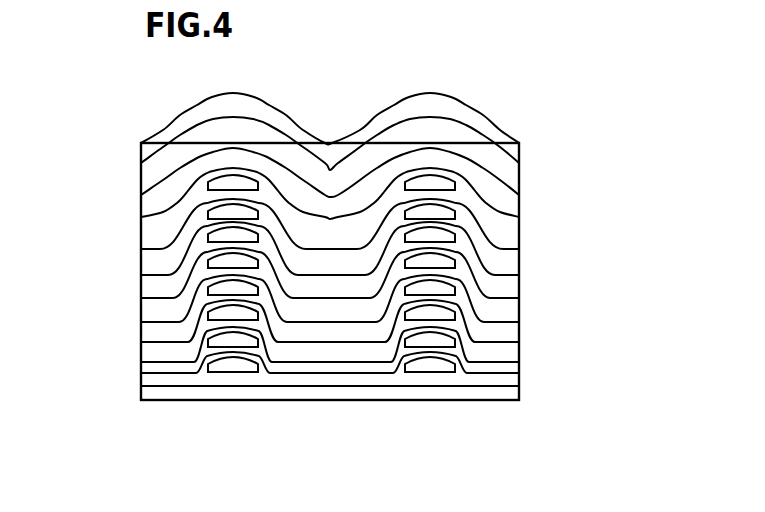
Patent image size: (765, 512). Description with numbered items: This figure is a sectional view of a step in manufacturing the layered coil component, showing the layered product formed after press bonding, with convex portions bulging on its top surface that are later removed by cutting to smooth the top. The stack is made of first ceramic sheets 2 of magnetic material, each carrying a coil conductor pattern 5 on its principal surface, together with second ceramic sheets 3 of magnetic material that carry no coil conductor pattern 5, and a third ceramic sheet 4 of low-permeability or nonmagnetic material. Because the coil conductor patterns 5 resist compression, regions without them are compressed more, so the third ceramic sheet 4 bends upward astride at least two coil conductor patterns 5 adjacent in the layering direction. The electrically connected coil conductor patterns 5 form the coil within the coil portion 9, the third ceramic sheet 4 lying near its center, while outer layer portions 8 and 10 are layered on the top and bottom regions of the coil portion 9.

The first ceramic sheet 2 is at (502, 290).
The second ceramic sheet 3 is at (422, 130).
The third ceramic sheet 4 is at (157, 300).
The coil conductor pattern 5 is at (235, 365).
The outer layer portion 8 is at (625, 140).
The coil portion 9 is at (625, 180).
The outer layer portion 10 is at (625, 375).